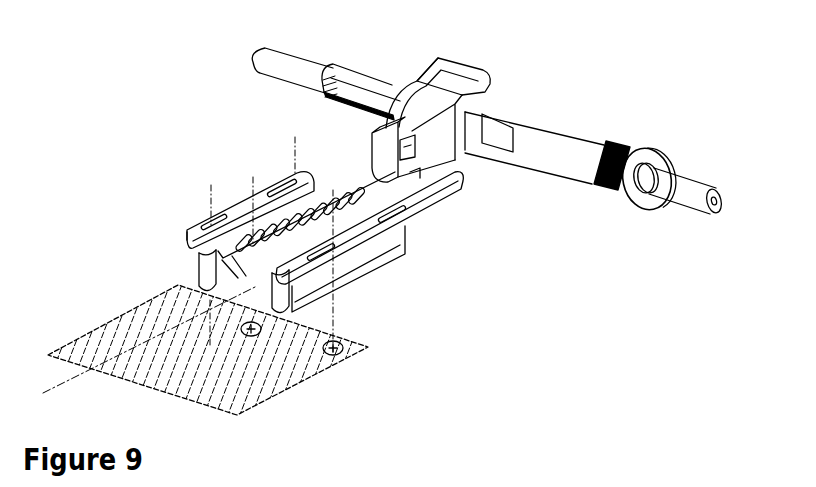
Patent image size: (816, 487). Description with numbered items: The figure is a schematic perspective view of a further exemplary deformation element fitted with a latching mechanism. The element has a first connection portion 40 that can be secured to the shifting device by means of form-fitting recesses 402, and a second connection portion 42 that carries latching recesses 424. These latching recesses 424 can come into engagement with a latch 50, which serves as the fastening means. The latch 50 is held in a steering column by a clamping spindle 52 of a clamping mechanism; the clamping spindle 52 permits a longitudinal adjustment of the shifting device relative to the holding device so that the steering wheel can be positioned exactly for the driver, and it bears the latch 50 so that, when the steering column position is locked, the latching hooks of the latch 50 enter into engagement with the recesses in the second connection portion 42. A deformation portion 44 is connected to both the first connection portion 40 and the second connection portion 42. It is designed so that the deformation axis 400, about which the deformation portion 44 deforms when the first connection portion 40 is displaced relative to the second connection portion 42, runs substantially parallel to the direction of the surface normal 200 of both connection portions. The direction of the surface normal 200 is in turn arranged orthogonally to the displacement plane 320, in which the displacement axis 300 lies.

The first connection portion 40 is at (361, 238).
The second connection portion 42 is at (408, 177).
The deformation portion 44 is at (357, 265).
The latch 50 is at (418, 130).
The clamping spindle 52 is at (565, 165).
The surface normal 200 is at (295, 143).
The displacement axis 300 is at (180, 322).
The displacement plane 320 is at (145, 302).
The deformation axis 400 is at (270, 170).
The form-fitting recesses 402 is at (193, 226).
The latching recesses 424 is at (357, 177).